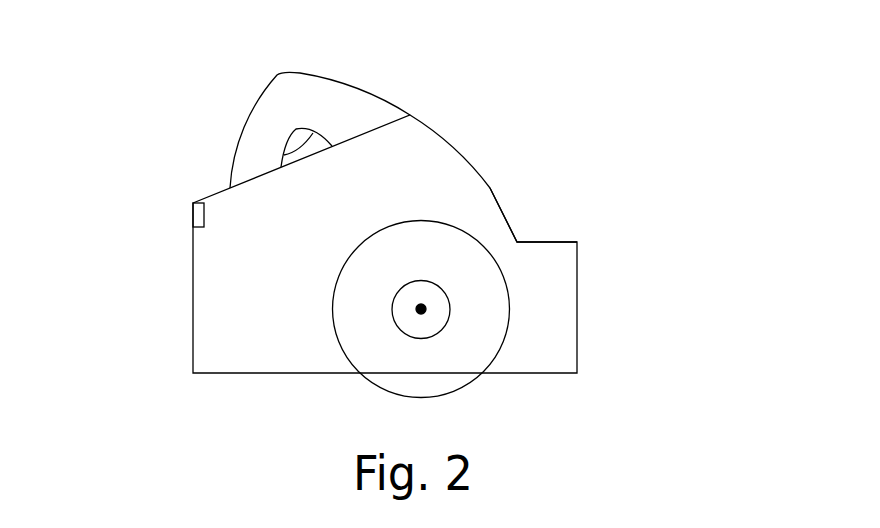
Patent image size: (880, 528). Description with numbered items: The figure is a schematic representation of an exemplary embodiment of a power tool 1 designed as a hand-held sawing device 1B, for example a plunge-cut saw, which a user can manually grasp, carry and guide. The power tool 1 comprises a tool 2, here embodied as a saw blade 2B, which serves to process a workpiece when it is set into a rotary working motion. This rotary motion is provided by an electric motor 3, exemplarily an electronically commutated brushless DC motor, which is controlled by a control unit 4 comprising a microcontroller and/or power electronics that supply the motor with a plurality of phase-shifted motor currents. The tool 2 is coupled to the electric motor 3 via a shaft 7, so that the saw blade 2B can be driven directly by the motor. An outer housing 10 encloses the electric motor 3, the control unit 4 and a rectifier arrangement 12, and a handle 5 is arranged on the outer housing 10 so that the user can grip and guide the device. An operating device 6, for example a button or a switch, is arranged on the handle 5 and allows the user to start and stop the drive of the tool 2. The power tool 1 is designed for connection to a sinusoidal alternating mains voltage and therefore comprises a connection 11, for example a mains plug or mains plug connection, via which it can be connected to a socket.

The power tool 1 is at (311, 202).
The sawing device 1B is at (176, 111).
The tool 2 is at (448, 322).
The saw blade 2B is at (443, 387).
The electric motor 3 is at (360, 355).
The control unit 4 is at (360, 355).
The handle 5 is at (263, 115).
The operating device 6 is at (299, 137).
The shaft 7 is at (422, 300).
The outer housing 10 is at (490, 188).
The connection 11 is at (192, 215).
The rectifier arrangement 12 is at (415, 328).